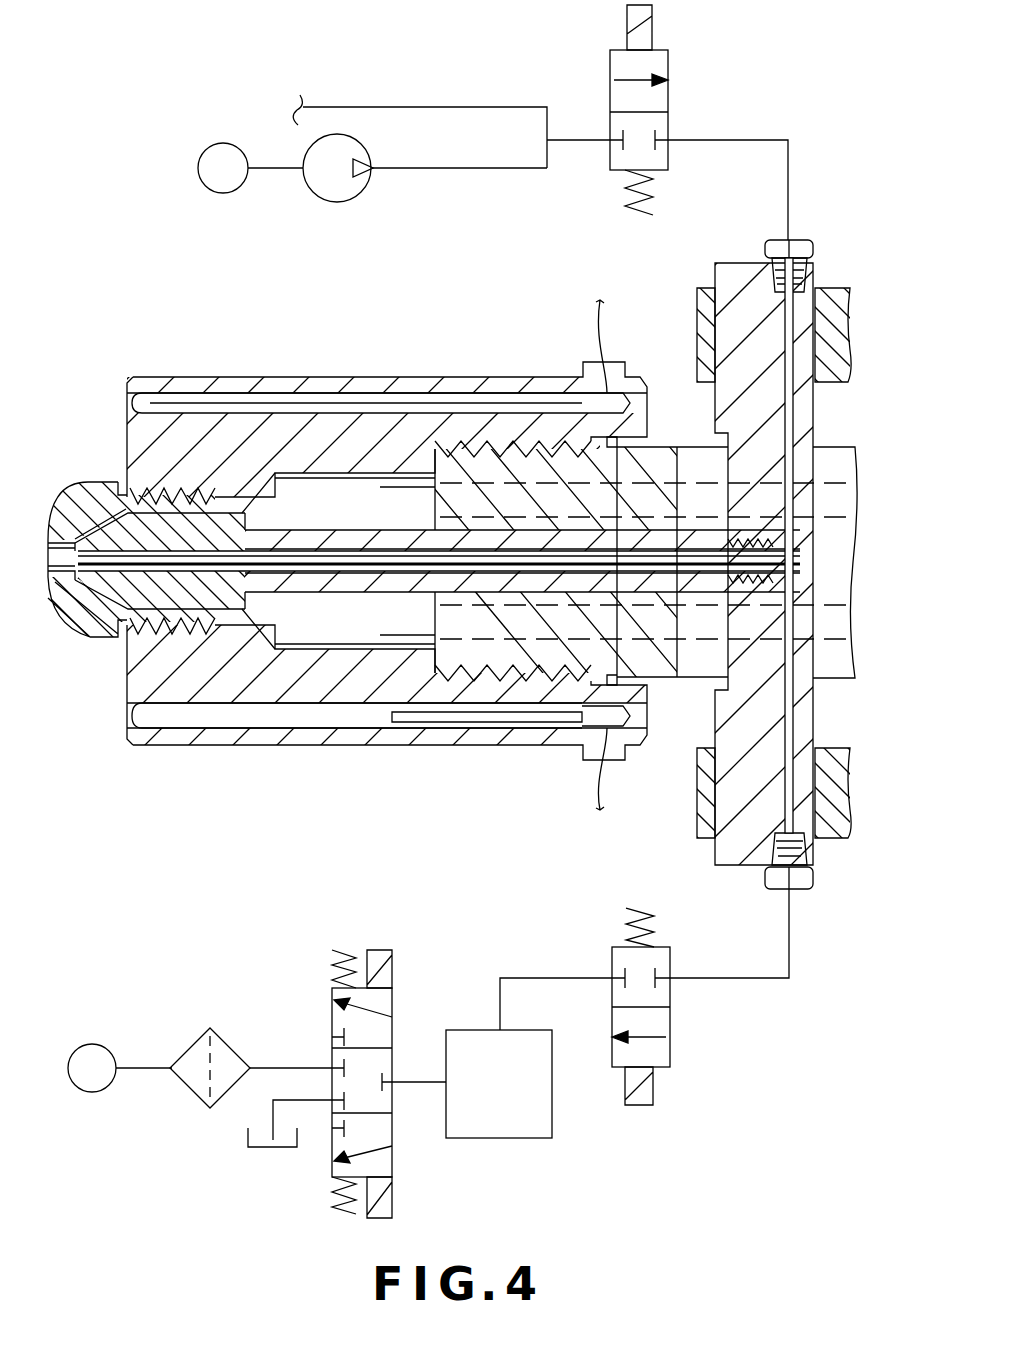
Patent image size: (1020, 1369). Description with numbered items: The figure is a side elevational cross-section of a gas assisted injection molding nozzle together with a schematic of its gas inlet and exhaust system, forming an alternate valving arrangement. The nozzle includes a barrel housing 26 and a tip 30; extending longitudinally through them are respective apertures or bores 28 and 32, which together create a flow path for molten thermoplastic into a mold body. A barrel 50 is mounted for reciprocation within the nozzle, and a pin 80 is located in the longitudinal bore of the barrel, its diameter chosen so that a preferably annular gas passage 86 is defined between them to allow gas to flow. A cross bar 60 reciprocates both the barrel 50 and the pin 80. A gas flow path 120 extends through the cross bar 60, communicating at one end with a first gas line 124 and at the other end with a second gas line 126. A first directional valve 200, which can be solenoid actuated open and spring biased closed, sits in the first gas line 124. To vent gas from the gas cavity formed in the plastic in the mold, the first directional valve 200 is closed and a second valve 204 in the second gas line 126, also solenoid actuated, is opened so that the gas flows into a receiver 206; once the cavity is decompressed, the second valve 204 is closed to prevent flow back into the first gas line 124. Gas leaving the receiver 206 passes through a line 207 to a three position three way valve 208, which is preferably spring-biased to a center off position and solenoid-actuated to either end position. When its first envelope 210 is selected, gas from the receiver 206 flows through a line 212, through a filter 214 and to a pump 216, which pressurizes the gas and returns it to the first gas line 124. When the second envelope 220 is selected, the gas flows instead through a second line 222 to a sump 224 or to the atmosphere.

The barrel housing 26 is at (407, 373).
The aperture or bore 28 is at (300, 480).
The tip 30 is at (88, 475).
The aperture or bore 32 is at (47, 578).
The barrel 50 is at (320, 525).
The cross bar 60 is at (733, 270).
The pin 80 is at (353, 560).
The annular gas passage 86 is at (148, 590).
The gas flow path 120 is at (800, 417).
The first gas line 124 is at (703, 140).
The second gas line 126 is at (692, 980).
The first directional valve 200 is at (668, 65).
The second valve 204 is at (667, 1023).
The receiver 206 is at (494, 1128).
The line 207 is at (418, 1080).
The three position three way valve 208 is at (330, 1027).
The first envelope 210 is at (356, 1072).
The line 212 is at (288, 1066).
The filter 214 is at (203, 1045).
The pump 216 is at (333, 173).
The second envelope 220 is at (338, 1140).
The second line 222 is at (305, 1090).
The sump 224 is at (250, 1147).